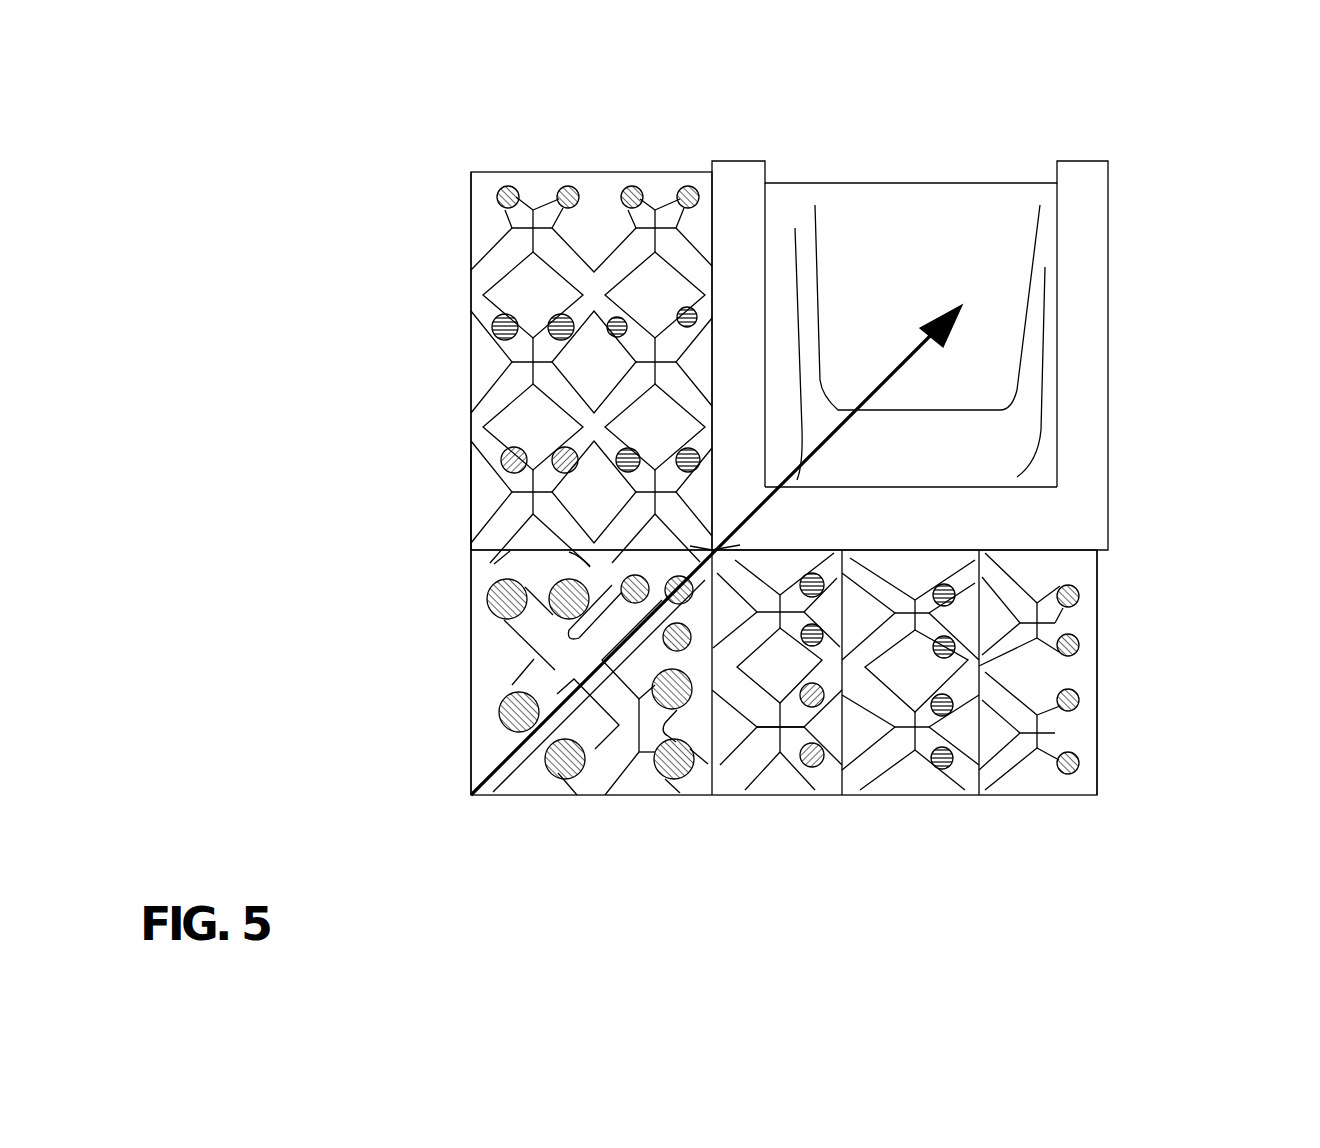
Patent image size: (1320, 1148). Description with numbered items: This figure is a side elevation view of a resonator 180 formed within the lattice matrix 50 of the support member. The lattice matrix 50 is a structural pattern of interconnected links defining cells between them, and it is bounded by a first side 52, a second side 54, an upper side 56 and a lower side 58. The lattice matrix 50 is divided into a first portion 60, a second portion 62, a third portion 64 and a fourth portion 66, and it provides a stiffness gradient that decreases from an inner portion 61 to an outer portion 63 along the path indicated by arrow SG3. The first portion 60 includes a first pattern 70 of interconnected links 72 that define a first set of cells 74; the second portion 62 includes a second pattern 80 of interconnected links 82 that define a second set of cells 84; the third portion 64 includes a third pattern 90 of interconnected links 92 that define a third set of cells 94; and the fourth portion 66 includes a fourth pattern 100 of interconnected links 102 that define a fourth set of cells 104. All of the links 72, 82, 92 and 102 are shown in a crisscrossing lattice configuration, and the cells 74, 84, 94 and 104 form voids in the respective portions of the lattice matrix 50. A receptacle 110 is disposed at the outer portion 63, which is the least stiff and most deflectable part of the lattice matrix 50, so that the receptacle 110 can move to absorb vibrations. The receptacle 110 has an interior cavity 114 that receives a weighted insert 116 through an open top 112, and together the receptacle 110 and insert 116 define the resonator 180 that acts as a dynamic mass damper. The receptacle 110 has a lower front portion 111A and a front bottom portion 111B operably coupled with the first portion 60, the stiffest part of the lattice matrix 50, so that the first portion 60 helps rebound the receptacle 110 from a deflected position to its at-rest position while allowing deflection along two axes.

The lattice matrix 50 is at (811, 490).
The first side 52 is at (471, 448).
The second side 54 is at (1097, 644).
The upper side 56 is at (733, 511).
The lower side 58 is at (759, 736).
The first portion 60 is at (534, 715).
The inner portion 61 is at (471, 795).
The second portion 62 is at (463, 522).
The outer portion 63 is at (982, 303).
The third portion 64 is at (463, 359).
The fourth portion 66 is at (733, 549).
The first pattern 70 is at (509, 653).
The interconnected links 72 is at (528, 627).
The first set of cells 74 is at (588, 719).
The second pattern 80 is at (779, 774).
The interconnected links 82 is at (748, 758).
The second set of cells 84 is at (734, 730).
The third pattern 90 is at (947, 724).
The interconnected links 92 is at (867, 762).
The third set of cells 94 is at (912, 676).
The fourth pattern 100 is at (1104, 713).
The interconnected links 102 is at (1052, 746).
The fourth set of cells 104 is at (1034, 670).
The receptacle 110 is at (982, 303).
The lower front portion 111A is at (712, 550).
The front bottom portion 111B is at (712, 550).
The open top 112 is at (1029, 153).
The interior cavity 114 is at (950, 392).
The insert 116 is at (800, 160).
The resonator 180 is at (811, 490).
The arrow SG3 is at (870, 393).